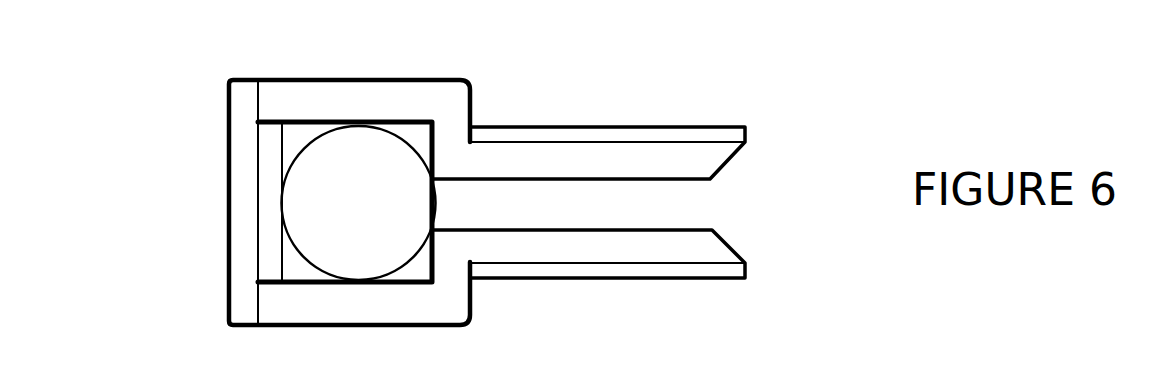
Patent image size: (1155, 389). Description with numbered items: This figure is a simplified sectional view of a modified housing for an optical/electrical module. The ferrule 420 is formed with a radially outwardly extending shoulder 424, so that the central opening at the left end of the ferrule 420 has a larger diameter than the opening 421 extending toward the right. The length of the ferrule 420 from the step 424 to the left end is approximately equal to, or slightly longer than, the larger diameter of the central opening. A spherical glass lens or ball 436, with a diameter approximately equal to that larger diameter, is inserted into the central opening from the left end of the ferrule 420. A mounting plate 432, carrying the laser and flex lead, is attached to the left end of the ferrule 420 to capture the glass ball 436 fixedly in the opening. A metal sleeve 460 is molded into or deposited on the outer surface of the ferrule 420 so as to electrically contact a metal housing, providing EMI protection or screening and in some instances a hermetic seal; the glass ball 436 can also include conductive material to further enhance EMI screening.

The mounting plate 432 is at (238, 295).
The shoulder 424 is at (443, 112).
The glass ball 436 is at (415, 215).
The ferrule 420 is at (711, 162).
The metal sleeve 460 is at (573, 140).
The opening 421 is at (701, 216).